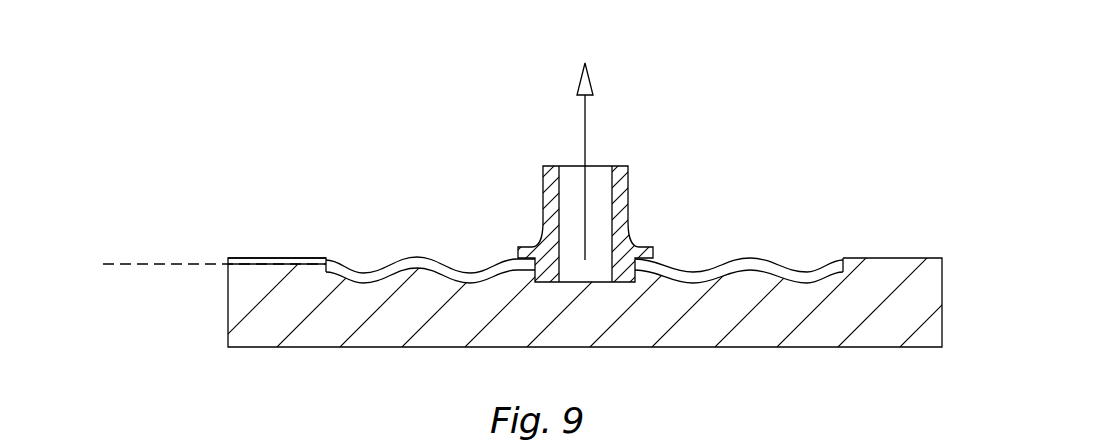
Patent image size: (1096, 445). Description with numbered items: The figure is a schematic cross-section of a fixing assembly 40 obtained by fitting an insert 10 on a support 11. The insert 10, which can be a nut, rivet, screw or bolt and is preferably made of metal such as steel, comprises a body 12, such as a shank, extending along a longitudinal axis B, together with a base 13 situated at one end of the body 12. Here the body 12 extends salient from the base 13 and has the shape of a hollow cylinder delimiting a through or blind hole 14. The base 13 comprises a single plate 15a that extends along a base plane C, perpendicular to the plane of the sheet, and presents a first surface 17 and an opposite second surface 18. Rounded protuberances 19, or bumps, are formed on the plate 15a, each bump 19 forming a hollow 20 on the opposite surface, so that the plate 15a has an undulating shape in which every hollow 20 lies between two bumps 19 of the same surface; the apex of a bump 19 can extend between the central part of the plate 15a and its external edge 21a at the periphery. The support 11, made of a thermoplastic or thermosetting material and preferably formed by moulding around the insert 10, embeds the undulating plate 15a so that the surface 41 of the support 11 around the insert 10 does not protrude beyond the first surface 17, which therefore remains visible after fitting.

The insert 10 is at (726, 154).
The support 11 is at (887, 333).
The body 12 is at (626, 180).
The base 13 is at (445, 255).
The hole 14 is at (601, 180).
The plate 15a is at (778, 270).
The first surface 17 is at (833, 262).
The second surface 18 is at (828, 281).
The protuberance 19 is at (757, 264).
The hollow 20 is at (694, 267).
The external edge 21a is at (310, 265).
The fixing assembly 40 is at (333, 194).
The surface 41 is at (264, 257).
The longitudinal axis B is at (583, 118).
The base plane C is at (142, 264).